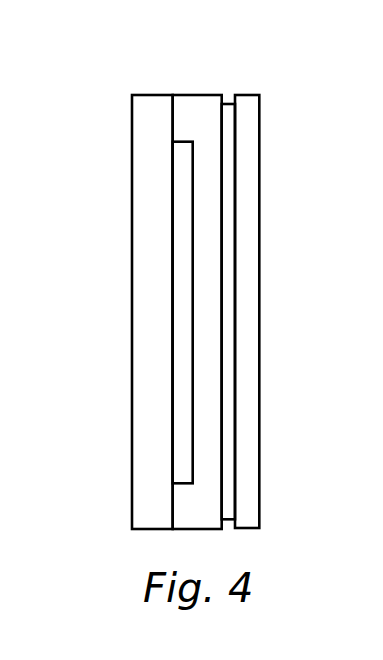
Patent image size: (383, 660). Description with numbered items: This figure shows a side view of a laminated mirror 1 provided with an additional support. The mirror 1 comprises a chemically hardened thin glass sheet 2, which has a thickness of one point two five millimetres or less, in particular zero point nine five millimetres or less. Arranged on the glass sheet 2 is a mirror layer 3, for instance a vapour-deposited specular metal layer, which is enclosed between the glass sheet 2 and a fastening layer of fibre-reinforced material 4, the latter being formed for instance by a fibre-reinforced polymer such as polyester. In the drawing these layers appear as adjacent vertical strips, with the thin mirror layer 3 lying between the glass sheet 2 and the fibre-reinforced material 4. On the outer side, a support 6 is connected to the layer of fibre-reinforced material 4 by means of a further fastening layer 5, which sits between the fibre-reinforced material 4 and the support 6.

The mirror 1 is at (105, 90).
The chemically hardened thin glass sheet 2 is at (155, 188).
The mirror layer 3 is at (182, 232).
The fastening layer of fibre-reinforced material 4 is at (208, 308).
The fastening layer 5 is at (230, 385).
The support 6 is at (247, 463).